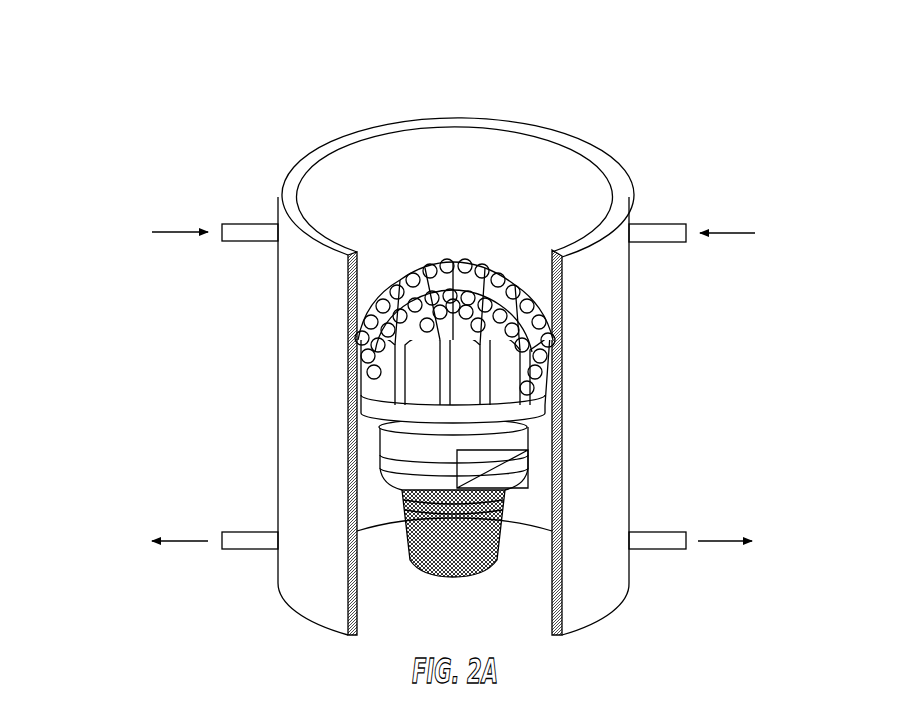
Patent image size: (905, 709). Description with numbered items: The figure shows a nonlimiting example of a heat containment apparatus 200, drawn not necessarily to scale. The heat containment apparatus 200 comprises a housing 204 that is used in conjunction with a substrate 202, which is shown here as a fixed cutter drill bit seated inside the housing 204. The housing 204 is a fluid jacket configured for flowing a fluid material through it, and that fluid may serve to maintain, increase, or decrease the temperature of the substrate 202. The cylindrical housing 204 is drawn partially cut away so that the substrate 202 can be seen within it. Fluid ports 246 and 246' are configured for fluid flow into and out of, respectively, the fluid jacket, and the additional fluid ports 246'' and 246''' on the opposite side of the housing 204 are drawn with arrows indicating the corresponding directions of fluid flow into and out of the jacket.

The heat containment apparatus 200 is at (218, 56).
The substrate 202 is at (438, 266).
The housing 204 is at (158, 144).
The fluid port 246 is at (215, 251).
The fluid port 246' is at (215, 559).
The nozzle 246'' is at (692, 251).
The nozzle 246''' is at (690, 559).